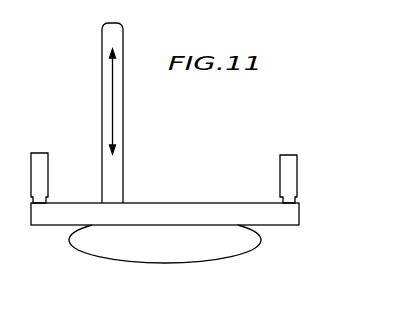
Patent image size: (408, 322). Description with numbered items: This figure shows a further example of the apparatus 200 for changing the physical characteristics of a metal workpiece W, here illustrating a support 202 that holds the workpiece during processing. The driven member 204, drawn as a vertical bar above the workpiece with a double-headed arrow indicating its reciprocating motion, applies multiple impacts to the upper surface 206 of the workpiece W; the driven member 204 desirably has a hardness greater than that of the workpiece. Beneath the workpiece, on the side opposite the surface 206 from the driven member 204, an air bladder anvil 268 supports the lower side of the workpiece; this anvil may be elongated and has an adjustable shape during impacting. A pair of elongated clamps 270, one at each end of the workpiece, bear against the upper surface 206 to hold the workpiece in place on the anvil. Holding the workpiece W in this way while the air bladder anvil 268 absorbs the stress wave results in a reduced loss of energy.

The apparatus 200 is at (119, 113).
The support 202 is at (270, 242).
The driven member 204 is at (124, 132).
The surface 206 is at (238, 203).
The air bladder anvil 268 is at (216, 261).
The clamps 270 is at (72, 140).